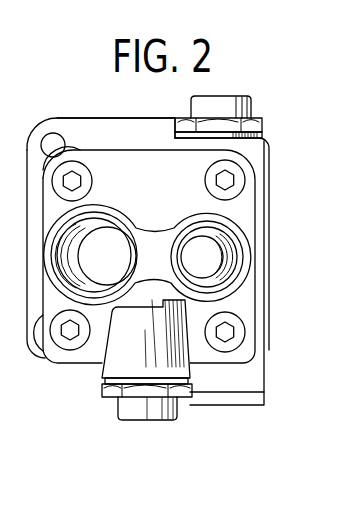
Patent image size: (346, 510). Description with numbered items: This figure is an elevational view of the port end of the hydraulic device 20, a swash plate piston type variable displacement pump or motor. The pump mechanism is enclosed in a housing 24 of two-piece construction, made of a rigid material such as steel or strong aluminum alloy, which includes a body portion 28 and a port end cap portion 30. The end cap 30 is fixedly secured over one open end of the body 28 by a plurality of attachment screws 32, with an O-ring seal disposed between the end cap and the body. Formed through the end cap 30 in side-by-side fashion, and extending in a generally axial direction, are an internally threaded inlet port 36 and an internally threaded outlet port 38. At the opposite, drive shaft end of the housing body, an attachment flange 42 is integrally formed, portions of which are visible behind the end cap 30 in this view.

The hydraulic device 20 is at (45, 370).
The housing 24 is at (262, 232).
The body portion 28 is at (257, 179).
The port end cap portion 30 is at (240, 218).
The attachment screws 32 is at (92, 183).
The inlet port 36 is at (94, 255).
The outlet port 38 is at (207, 257).
The attachment flange 42 is at (122, 125).